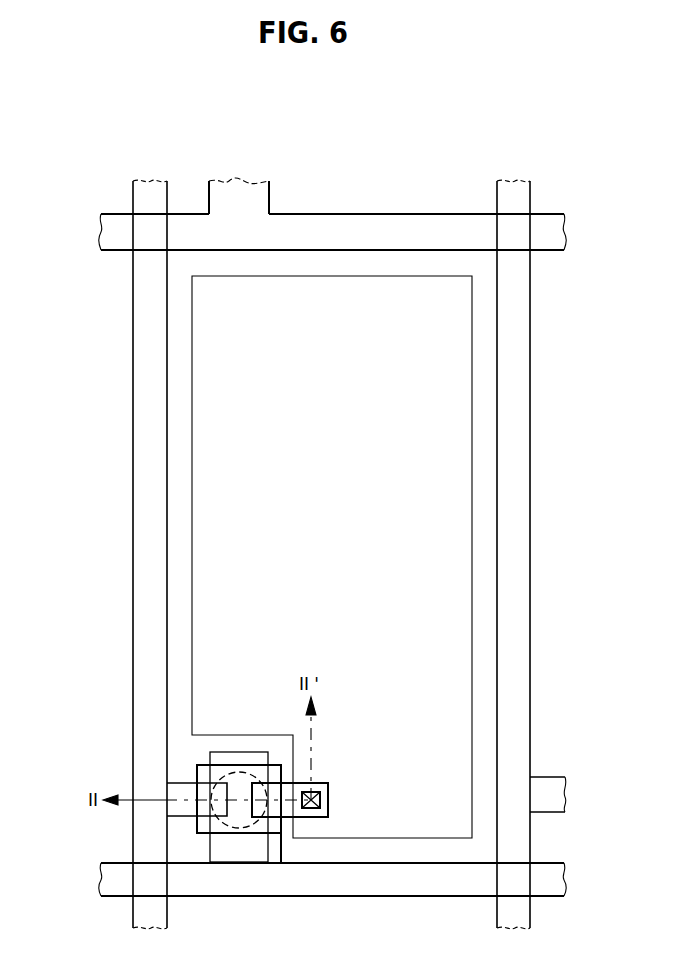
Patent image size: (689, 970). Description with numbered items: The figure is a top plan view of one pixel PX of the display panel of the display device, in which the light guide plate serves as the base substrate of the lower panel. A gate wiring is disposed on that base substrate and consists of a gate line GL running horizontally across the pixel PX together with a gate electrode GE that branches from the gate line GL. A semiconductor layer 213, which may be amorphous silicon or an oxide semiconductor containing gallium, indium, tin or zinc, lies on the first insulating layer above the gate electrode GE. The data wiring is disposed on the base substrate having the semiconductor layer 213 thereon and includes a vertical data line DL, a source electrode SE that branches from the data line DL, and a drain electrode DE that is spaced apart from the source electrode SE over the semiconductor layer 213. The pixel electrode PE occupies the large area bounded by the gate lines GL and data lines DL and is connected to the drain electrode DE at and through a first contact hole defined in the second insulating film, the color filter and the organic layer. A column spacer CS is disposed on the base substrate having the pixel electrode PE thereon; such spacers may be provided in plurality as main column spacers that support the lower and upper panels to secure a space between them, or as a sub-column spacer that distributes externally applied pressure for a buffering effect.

The pixel PX is at (230, 142).
The pixel electrode PE is at (472, 556).
The gate line GL is at (100, 234).
The data line DL is at (151, 181).
The semiconductor layer 213 is at (205, 834).
The gate electrode GE is at (263, 826).
The source electrode SE is at (183, 817).
The drain electrode DE is at (280, 856).
The column spacer CS is at (238, 829).